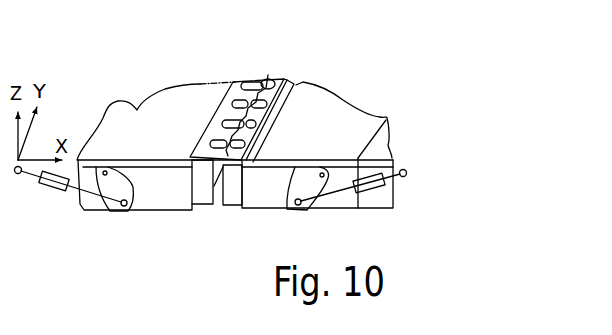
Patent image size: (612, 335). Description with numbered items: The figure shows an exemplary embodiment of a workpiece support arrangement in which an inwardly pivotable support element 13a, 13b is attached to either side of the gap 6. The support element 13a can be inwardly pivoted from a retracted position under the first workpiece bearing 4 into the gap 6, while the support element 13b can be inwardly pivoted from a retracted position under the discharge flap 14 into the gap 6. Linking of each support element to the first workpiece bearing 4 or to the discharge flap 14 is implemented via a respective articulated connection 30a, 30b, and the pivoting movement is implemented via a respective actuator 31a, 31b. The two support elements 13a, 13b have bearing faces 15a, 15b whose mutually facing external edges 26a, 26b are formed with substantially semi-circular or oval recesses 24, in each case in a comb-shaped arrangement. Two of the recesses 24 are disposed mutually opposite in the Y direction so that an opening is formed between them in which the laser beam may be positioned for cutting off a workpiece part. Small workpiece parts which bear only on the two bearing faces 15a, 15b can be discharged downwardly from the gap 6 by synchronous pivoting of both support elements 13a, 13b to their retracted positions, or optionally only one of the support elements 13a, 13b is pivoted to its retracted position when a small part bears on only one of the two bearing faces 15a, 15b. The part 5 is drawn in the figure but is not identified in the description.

The first workpiece bearing 4 is at (137, 110).
The second housing part 5 is at (386, 117).
The gap 6 is at (262, 74).
The inwardly pivotable support element 13a is at (212, 98).
The inwardly pivotable support element 13b is at (299, 81).
The discharge flap 14 is at (342, 111).
The bearing face 15a is at (214, 160).
The bearing face 15b is at (247, 162).
The recesses 24 is at (218, 144).
The external edge 26a is at (270, 79).
The external edge 26b is at (237, 81).
The articulated connection 30a is at (130, 214).
The articulated connection 30b is at (288, 211).
The actuator 31a is at (32, 175).
The actuator 31b is at (392, 188).